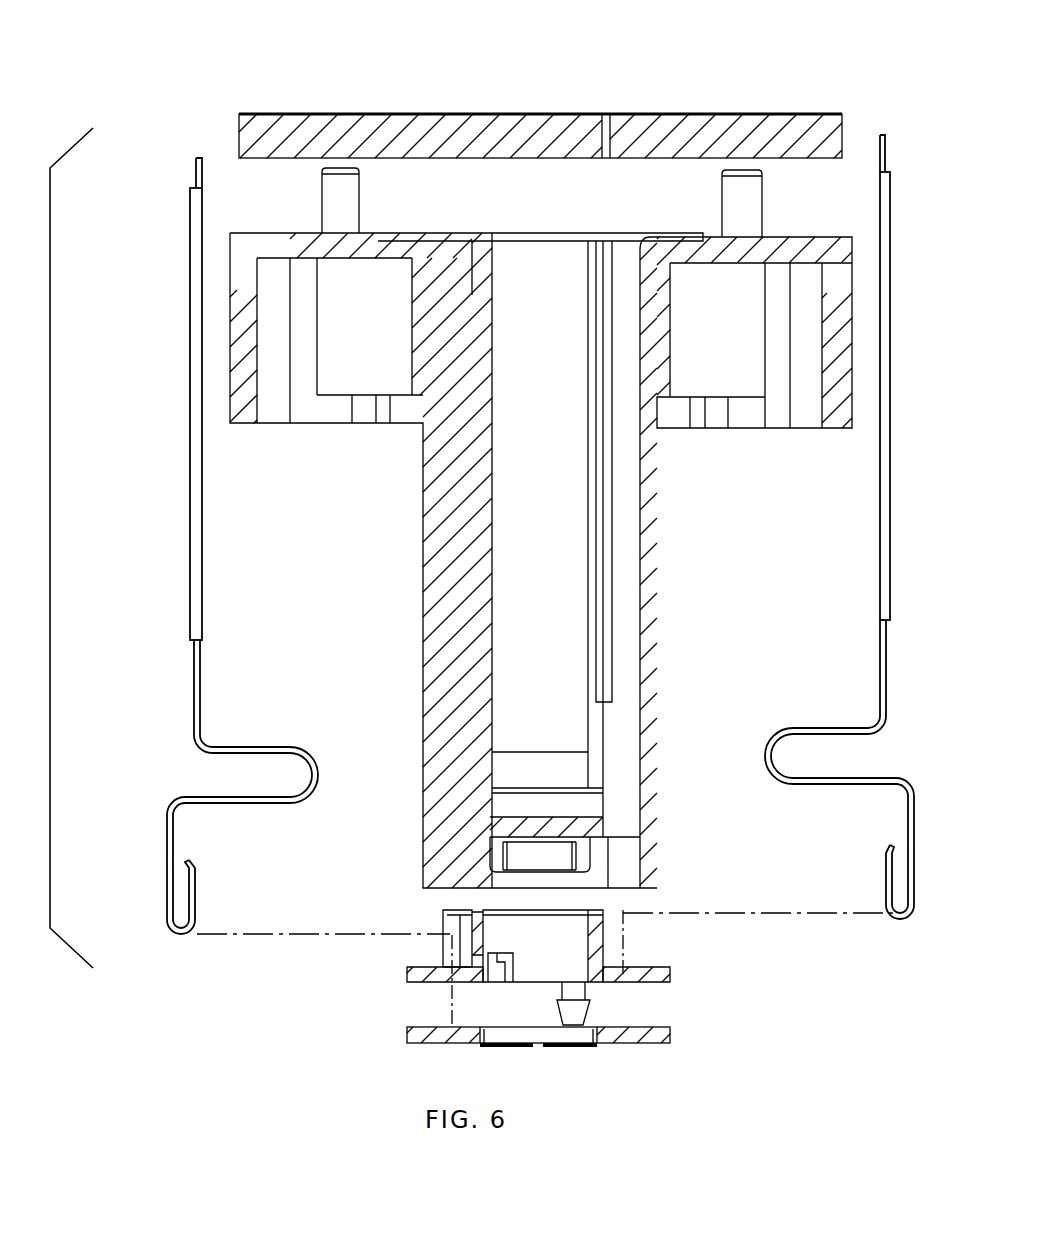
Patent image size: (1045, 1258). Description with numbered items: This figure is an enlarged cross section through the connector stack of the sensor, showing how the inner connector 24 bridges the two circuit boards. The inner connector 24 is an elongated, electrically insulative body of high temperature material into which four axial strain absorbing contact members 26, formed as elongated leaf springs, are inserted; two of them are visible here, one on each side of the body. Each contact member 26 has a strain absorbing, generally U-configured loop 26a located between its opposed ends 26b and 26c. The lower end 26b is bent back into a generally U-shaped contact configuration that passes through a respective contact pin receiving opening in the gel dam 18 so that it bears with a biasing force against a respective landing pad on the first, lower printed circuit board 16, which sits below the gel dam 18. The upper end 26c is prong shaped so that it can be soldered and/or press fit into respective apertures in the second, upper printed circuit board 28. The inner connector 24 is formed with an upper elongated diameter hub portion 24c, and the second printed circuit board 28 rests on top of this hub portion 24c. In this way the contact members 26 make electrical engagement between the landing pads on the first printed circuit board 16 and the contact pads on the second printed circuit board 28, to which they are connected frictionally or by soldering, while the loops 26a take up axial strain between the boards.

The first printed circuit board 16 is at (676, 1045).
The gel dam 18 is at (696, 960).
The inner connector 24 is at (437, 305).
The hub portion 24c is at (746, 357).
The contact member 26 is at (537, 501).
The strain absorbing loop 26a is at (302, 758).
The contact end 26b is at (197, 920).
The prong end 26c is at (196, 162).
The second printed circuit board 28 is at (458, 113).